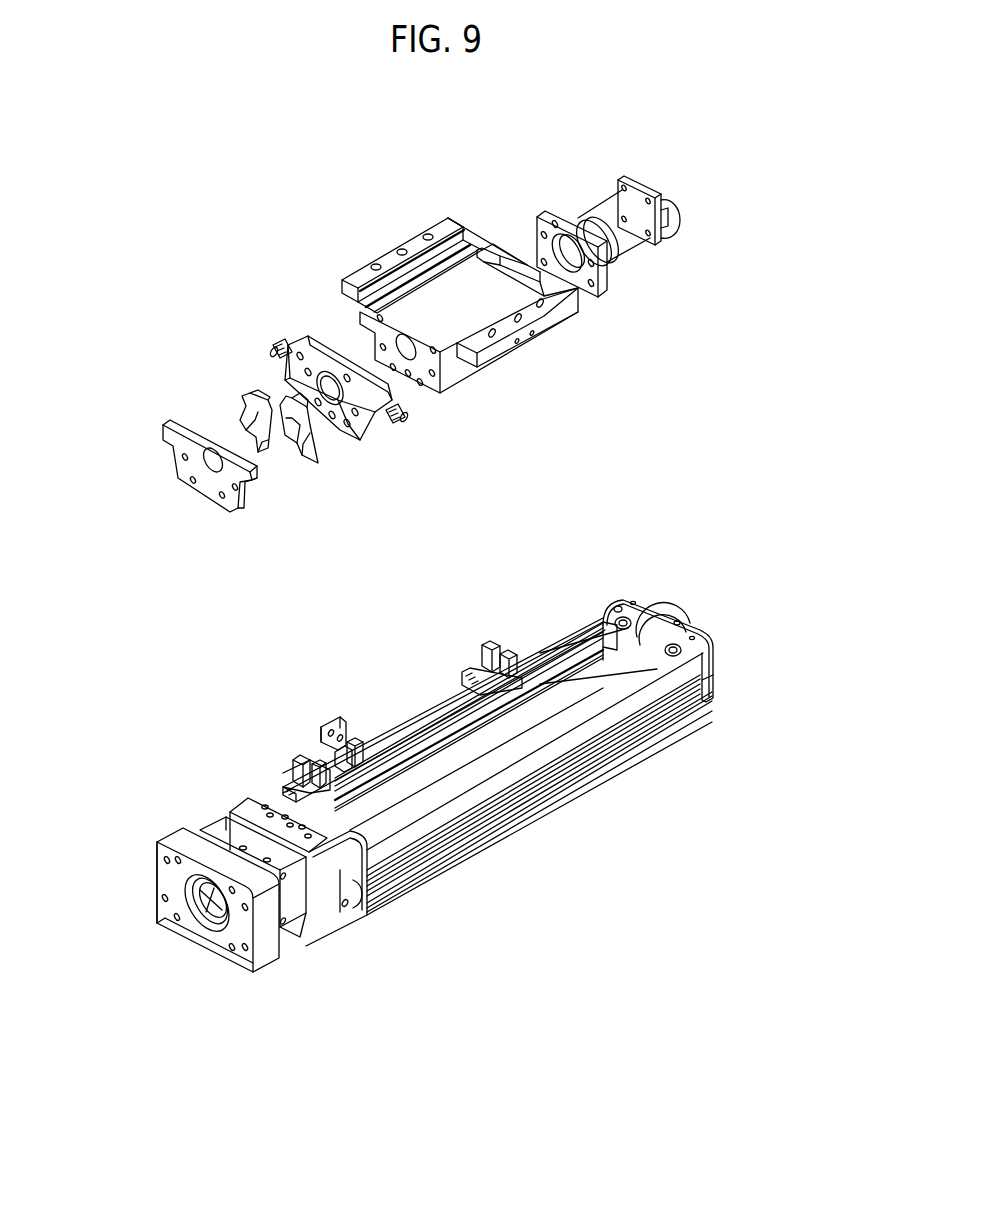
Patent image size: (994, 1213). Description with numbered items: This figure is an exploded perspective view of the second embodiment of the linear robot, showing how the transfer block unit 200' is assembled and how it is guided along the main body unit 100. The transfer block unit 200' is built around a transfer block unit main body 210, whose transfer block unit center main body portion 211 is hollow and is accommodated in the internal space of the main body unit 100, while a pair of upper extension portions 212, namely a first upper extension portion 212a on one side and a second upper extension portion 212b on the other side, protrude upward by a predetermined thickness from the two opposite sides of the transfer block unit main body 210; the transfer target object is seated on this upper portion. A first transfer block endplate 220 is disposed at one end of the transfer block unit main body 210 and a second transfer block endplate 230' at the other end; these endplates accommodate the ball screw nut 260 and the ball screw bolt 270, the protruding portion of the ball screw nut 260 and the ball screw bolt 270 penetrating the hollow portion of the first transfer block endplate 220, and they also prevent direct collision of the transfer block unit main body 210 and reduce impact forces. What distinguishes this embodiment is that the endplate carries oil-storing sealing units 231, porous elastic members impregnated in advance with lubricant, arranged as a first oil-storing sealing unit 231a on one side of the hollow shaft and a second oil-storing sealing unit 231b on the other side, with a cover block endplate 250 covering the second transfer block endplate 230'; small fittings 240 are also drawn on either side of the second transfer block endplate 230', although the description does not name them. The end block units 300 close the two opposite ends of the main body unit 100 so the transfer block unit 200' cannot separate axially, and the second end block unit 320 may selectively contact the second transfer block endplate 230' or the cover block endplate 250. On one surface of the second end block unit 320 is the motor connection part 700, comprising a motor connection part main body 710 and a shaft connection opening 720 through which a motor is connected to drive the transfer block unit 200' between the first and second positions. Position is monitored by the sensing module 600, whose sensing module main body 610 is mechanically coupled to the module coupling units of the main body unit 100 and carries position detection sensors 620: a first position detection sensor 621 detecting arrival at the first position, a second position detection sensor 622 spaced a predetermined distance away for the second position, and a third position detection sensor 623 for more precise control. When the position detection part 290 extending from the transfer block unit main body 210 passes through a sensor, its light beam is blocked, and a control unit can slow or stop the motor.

The main body unit 100 is at (460, 872).
The transfer block unit 200' is at (392, 340).
The transfer block unit main body 210 is at (332, 270).
The transfer block unit center main body portion 211 is at (466, 312).
The upper extension portions 212 is at (492, 268).
The first upper extension portion 212a is at (440, 228).
The second upper extension portion 212b is at (560, 318).
The first transfer block endplate 220 is at (545, 207).
The second transfer block endplate 230' is at (341, 394).
The oil-storing sealing units 231 is at (315, 484).
The first oil-storing sealing unit 231a is at (265, 460).
The second oil-storing sealing unit 231b is at (313, 440).
The fitting 240 is at (268, 347).
The cover block endplate 250 is at (200, 498).
The ball screw nut 260 is at (602, 190).
The ball screw bolt 270 is at (597, 657).
The position detection part 290 is at (337, 720).
The end block units 300 is at (720, 630).
The second end block unit 320 is at (337, 927).
The sensing module 600 is at (282, 772).
The sensing module main body 610 is at (283, 790).
The position detection sensors 620 is at (396, 679).
The first position detection sensor 621 is at (295, 748).
The second position detection sensor 622 is at (493, 643).
The third position detection sensor 623 is at (353, 747).
The motor connection part 700 is at (235, 980).
The motor connection part main body 710 is at (162, 910).
The shaft connection opening 720 is at (207, 913).